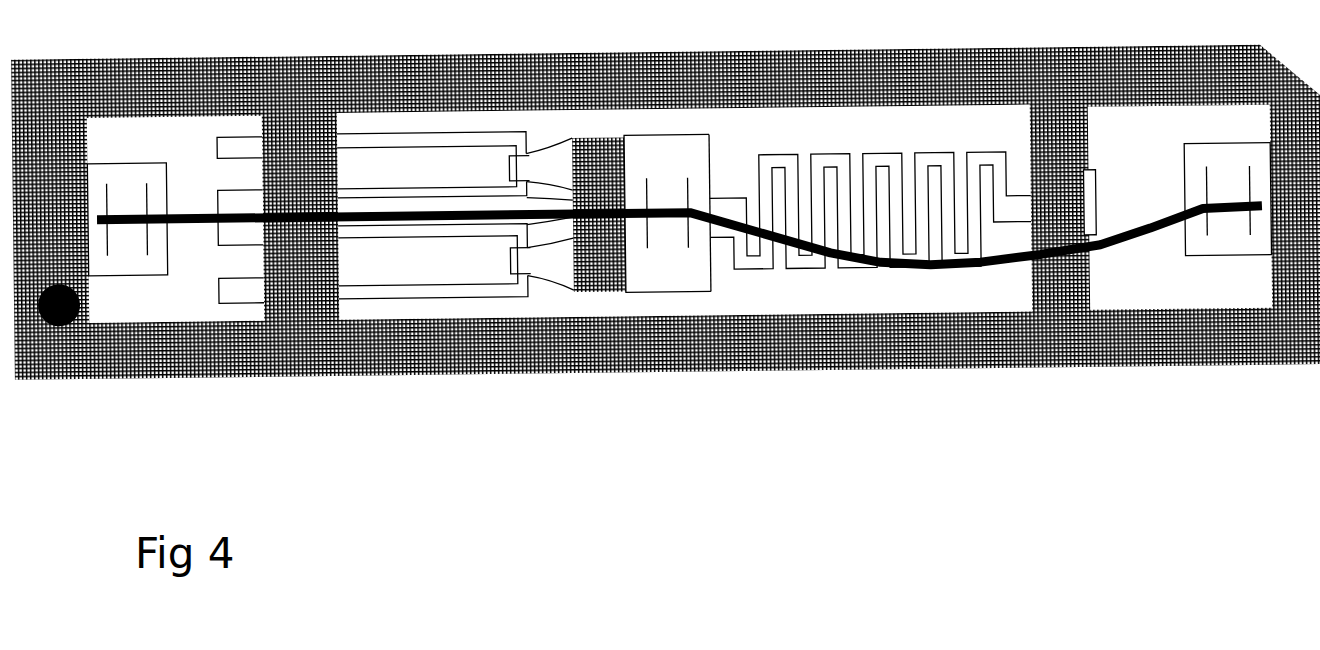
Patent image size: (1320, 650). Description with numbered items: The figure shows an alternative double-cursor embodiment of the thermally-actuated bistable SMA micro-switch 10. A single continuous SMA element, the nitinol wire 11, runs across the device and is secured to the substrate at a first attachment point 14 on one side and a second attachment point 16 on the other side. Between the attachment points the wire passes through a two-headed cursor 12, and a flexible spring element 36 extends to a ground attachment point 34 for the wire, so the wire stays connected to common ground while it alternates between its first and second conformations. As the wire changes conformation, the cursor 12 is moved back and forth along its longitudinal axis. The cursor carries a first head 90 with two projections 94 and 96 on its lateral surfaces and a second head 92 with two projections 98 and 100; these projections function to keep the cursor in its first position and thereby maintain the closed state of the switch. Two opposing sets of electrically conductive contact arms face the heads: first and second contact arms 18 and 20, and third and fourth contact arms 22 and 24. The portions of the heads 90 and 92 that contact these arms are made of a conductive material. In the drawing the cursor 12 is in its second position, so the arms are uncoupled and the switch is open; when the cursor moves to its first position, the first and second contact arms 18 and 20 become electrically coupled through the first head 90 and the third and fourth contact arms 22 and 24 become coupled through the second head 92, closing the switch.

The SMA micro-switch 10 is at (550, 399).
The nitinol wire 11 is at (930, 276).
The cursor 12 is at (670, 295).
The first attachment point 14 is at (123, 199).
The second attachment point 16 is at (1237, 220).
The first contact arm 18 is at (363, 147).
The second contact arm 20 is at (408, 189).
The third contact arm 22 is at (370, 239).
The fourth contact arm 24 is at (423, 280).
The ground attachment point 34 is at (670, 211).
The spring element 36 is at (832, 152).
The first head 90 is at (547, 149).
The second head 92 is at (560, 282).
The projection 94 is at (531, 150).
The projection 96 is at (538, 192).
The projection 98 is at (538, 237).
The projection 100 is at (543, 281).